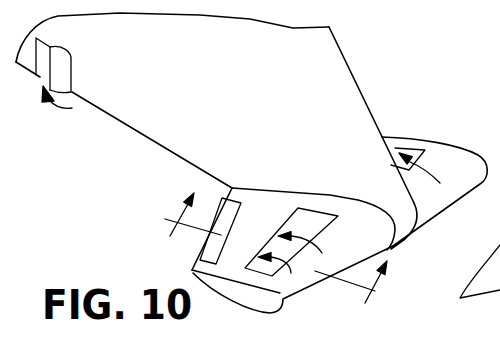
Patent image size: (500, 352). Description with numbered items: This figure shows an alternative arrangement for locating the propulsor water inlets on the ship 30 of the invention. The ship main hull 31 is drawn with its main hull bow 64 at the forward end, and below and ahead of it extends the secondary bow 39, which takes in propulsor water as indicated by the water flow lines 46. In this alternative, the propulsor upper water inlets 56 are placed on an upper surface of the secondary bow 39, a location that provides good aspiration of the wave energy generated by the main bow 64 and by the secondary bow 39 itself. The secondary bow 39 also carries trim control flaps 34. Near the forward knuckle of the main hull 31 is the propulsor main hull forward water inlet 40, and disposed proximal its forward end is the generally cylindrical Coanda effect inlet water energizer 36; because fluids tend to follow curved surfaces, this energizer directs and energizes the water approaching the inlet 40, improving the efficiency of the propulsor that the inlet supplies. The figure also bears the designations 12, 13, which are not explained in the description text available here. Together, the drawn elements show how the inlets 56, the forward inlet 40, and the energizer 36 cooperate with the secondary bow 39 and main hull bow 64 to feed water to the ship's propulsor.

The ship 30 is at (230, 96).
The ship main hull 31 is at (292, 123).
The main hull bow 64 is at (362, 95).
The secondary bow 39 is at (405, 137).
The trim control flaps 34 is at (203, 253).
The fold line 12 is at (155, 218).
The fold line 13 is at (357, 297).
The propulsor upper water inlets 56 is at (312, 230).
The water flow lines 46 is at (294, 264).
The propulsor main hull forward water inlet 40 is at (44, 43).
The Coanda effect inlet water energizer 36 is at (67, 75).